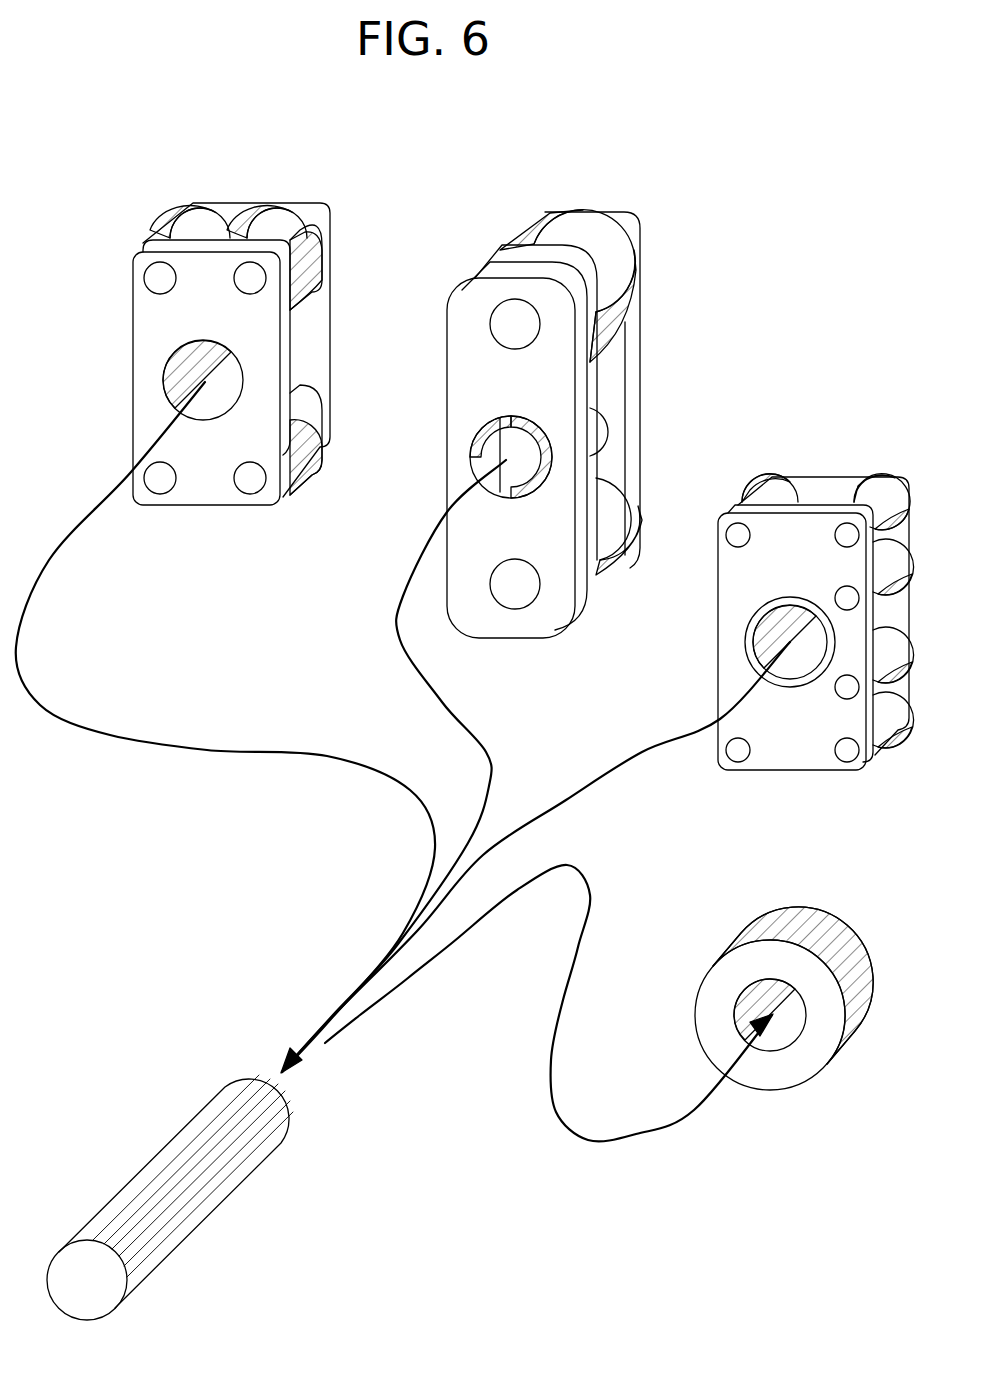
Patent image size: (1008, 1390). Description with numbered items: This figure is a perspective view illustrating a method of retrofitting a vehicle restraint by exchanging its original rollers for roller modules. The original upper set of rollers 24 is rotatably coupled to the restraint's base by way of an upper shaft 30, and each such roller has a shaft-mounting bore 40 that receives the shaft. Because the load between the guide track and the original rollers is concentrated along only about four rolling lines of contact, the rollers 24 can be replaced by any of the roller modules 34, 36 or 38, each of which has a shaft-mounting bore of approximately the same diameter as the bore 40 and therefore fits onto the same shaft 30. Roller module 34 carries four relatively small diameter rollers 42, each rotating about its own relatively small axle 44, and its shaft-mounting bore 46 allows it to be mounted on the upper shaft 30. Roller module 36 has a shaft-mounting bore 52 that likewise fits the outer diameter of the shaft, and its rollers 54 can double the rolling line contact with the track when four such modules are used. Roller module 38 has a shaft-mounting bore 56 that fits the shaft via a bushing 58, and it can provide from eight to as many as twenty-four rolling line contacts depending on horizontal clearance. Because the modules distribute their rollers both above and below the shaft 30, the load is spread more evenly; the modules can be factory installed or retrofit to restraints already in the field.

The upper set of rollers 24 is at (838, 935).
The upper shaft 30 is at (140, 1168).
The roller module 34 is at (322, 325).
The roller module 36 is at (640, 398).
The roller module 38 is at (826, 478).
The shaft-mounting bore 40 is at (762, 1050).
The rollers 42 is at (198, 225).
The axle 44 is at (155, 290).
The shaft-mounting bore 46 is at (190, 358).
The shaft-mounting bore 52 is at (478, 442).
The roller 54 is at (590, 248).
The shaft-mounting bore 56 is at (782, 677).
The bushing 58 is at (745, 652).